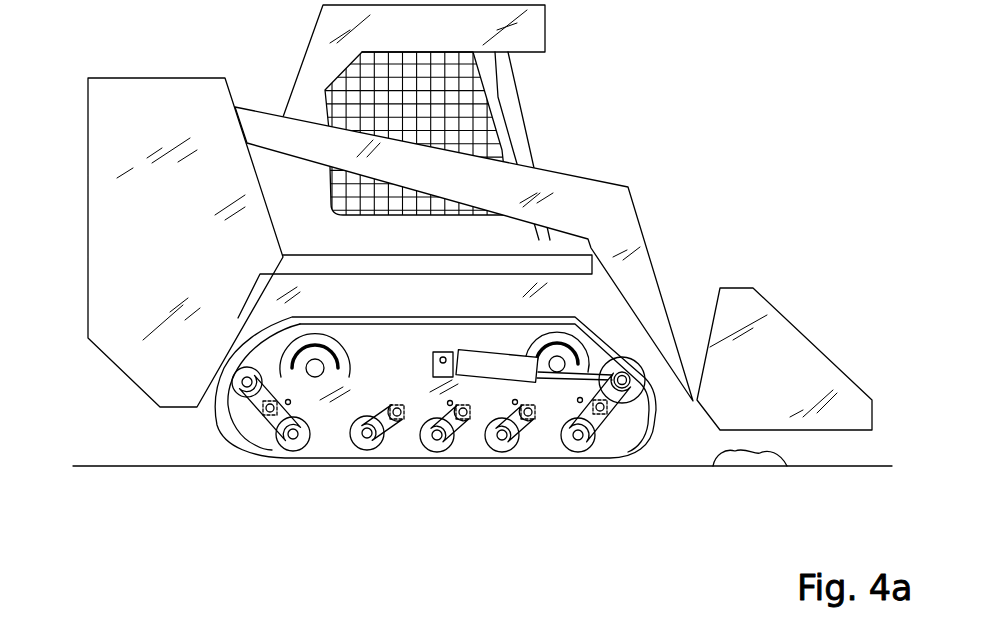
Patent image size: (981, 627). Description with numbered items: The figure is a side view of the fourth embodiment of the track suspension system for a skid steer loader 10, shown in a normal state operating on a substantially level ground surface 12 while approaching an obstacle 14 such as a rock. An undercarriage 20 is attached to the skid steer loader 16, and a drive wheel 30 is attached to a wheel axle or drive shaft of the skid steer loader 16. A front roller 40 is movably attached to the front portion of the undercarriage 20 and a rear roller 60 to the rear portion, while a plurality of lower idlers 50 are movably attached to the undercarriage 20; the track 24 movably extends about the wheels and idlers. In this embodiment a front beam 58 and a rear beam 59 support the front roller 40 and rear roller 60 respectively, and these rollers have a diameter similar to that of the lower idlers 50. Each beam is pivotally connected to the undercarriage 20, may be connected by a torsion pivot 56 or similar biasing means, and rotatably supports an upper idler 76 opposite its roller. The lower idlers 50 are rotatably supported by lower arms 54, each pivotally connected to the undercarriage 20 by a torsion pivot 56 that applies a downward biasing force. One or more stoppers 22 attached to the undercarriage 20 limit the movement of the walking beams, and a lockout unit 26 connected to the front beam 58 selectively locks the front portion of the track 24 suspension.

The skid steer loader track suspension system 10 is at (640, 130).
The ground surface 12 is at (112, 466).
The obstacle 14 is at (780, 464).
The skid steer loader 16 is at (290, 68).
The undercarriage 20 is at (322, 427).
The stopper 22 is at (393, 400).
The track 24 is at (450, 326).
The lockout unit 26 is at (477, 352).
The drive wheel 30 is at (283, 357).
The front roller 40 is at (583, 430).
The lower idlers 50 is at (373, 450).
The lower arms 54 is at (400, 427).
The torsion pivot 56 is at (238, 398).
The front beam 58 is at (622, 412).
The rear beam 59 is at (216, 425).
The rear roller 60 is at (287, 445).
The upper idler 76 is at (232, 380).